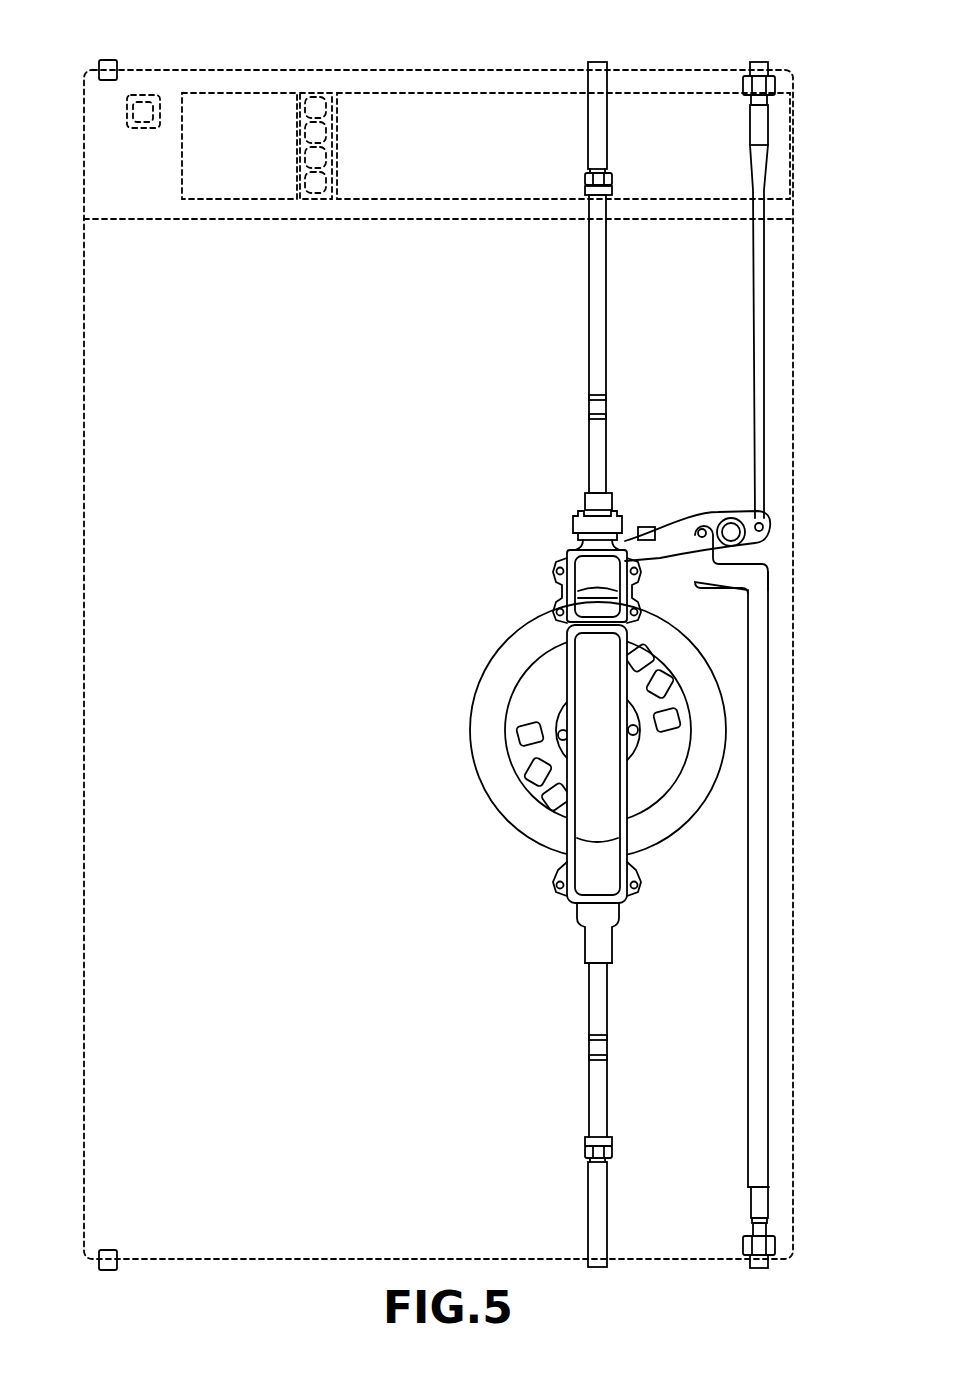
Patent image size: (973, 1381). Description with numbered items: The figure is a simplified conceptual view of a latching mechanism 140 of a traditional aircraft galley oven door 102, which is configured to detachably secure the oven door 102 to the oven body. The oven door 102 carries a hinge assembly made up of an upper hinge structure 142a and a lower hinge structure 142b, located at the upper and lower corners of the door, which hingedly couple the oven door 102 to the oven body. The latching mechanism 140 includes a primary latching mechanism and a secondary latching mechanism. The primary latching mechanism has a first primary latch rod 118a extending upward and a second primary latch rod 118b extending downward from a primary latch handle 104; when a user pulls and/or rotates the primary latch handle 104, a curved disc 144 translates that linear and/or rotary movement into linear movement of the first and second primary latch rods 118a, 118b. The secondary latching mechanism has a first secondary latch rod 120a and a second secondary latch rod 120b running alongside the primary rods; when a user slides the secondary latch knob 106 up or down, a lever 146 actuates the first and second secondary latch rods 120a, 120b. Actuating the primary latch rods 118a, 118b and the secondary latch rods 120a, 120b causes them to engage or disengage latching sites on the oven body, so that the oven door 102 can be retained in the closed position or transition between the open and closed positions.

The oven door 102 is at (84, 613).
The primary latch handle 104 is at (597, 782).
The secondary latch knob 106 is at (588, 570).
The first primary latch rod 118a is at (588, 335).
The second primary latch rod 118b is at (590, 1003).
The first secondary latch rod 120a is at (753, 335).
The second secondary latch rod 120b is at (748, 1003).
The latching mechanism 140 is at (813, 443).
The upper hinge structure 142a is at (107, 58).
The lower hinge structure 142b is at (107, 1272).
The curved disc 144 is at (518, 780).
The lever 146 is at (690, 522).